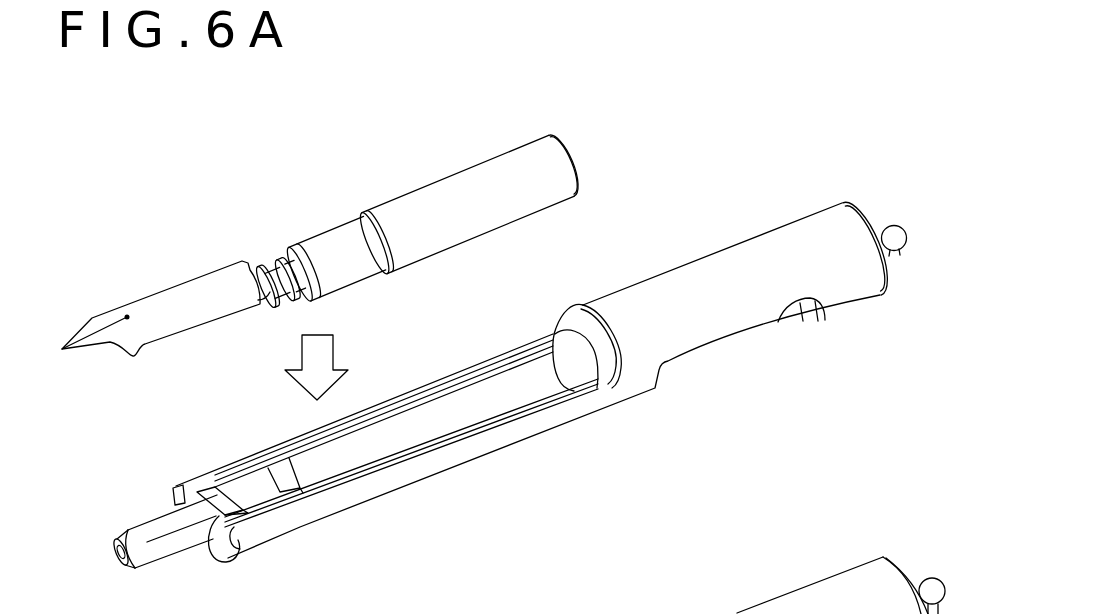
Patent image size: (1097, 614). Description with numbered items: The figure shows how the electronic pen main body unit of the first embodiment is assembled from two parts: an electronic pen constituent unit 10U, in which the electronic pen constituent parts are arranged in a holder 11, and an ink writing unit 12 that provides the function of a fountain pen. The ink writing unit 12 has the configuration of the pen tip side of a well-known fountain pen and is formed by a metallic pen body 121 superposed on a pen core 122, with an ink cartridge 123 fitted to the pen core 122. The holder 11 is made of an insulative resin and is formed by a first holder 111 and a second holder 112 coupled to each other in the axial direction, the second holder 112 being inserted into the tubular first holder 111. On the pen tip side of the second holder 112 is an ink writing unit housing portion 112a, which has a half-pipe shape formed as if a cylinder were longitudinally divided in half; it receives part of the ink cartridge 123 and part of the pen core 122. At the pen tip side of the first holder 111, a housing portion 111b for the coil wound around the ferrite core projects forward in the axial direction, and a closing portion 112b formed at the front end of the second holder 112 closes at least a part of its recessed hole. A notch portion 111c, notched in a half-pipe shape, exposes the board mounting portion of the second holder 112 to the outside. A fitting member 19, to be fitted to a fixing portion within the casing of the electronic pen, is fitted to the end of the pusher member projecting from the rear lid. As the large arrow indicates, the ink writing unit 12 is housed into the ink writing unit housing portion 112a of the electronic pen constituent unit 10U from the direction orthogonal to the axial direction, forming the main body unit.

The ink writing unit 12 is at (355, 128).
The pen body 121 is at (170, 303).
The pen core 122 is at (263, 268).
The ink cartridge 123 is at (403, 215).
The electronic pen constituent unit 10U is at (660, 272).
The holder 11 is at (637, 383).
The first holder 111 is at (438, 462).
The housing portion 111b is at (173, 548).
The notch portion 111c is at (727, 347).
The second holder 112 is at (480, 380).
The ink writing unit housing portion 112a is at (410, 420).
The closing portion 112b is at (210, 487).
The fitting member 19 is at (898, 252).